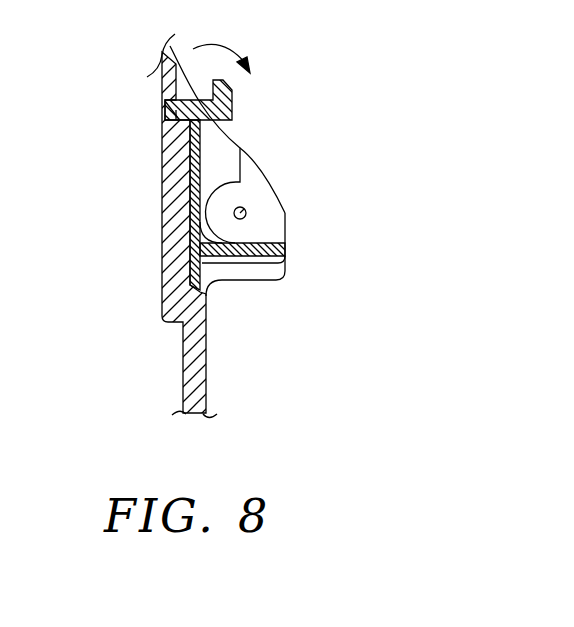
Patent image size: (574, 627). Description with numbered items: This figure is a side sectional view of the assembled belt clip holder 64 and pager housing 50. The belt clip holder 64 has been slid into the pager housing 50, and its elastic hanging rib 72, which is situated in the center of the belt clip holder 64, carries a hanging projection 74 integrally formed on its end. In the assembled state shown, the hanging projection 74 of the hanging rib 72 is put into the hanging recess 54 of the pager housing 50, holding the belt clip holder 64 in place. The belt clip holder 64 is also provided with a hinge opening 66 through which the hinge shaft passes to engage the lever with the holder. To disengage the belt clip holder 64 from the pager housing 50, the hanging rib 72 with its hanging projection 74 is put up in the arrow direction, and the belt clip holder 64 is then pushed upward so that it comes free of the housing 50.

The pager housing 50 is at (200, 357).
The hanging recess 54 is at (178, 122).
The belt clip holder 64 is at (285, 252).
The hinge opening 66 is at (246, 209).
The elastic hanging rib 72 is at (232, 100).
The hanging projection 74 is at (163, 106).